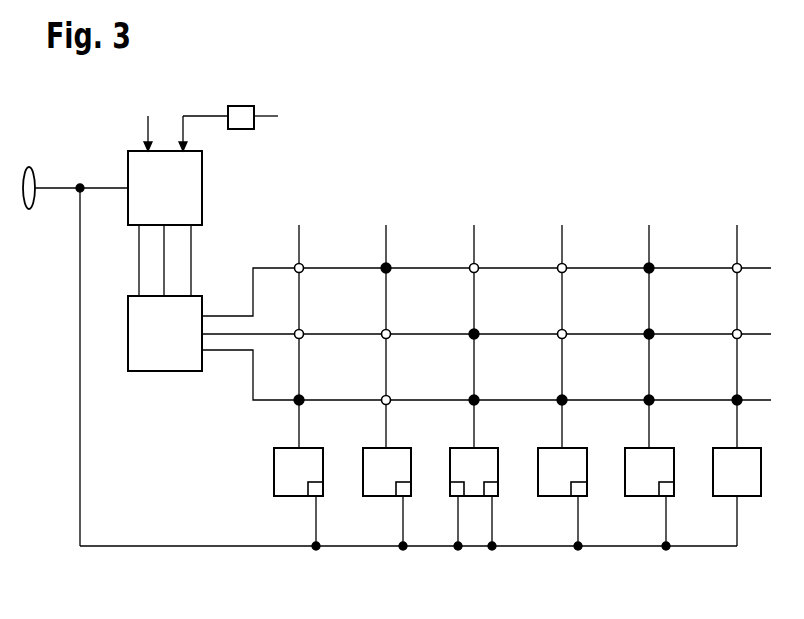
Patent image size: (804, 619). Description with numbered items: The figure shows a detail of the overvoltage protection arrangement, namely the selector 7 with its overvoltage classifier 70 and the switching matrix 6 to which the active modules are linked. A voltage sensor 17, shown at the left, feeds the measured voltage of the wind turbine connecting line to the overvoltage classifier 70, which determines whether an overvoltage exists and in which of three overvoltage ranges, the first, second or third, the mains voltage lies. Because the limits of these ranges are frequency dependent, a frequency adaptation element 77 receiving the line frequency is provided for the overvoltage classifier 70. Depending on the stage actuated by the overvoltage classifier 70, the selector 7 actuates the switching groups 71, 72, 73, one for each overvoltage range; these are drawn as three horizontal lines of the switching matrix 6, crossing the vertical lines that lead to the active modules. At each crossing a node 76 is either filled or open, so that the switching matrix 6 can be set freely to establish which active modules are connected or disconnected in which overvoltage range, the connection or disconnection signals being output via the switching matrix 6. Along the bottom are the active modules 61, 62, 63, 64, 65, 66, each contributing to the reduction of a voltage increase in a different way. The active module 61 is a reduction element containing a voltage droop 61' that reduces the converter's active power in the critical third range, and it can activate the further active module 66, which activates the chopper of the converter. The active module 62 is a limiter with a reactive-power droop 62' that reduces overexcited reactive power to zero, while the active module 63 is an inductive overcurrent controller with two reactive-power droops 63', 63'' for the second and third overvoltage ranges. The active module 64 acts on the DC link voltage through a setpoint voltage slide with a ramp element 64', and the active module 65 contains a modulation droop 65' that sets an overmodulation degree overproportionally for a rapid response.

The switching matrix 6 is at (718, 178).
The selector 7 is at (158, 360).
The voltage sensor 17 is at (33, 204).
The overvoltage classifier 70 is at (192, 172).
The switching group 71 is at (275, 262).
The switching group 72 is at (275, 328).
The switching group 73 is at (275, 393).
The matrix node 76 is at (478, 262).
The frequency adaptation element 77 is at (247, 118).
The active module 61 is at (277, 492).
The voltage droop 61' is at (303, 536).
The active module 62 is at (365, 492).
The reactive-power droop 62' is at (389, 536).
The active module 63 is at (452, 492).
The reactive-power droop 63' is at (465, 536).
The reactive-power droop 63'' is at (511, 483).
The active module 64 is at (540, 492).
The ramp element 64' is at (568, 536).
The active module 65 is at (628, 492).
The modulation droop 65' is at (654, 536).
The active module 66 is at (718, 472).